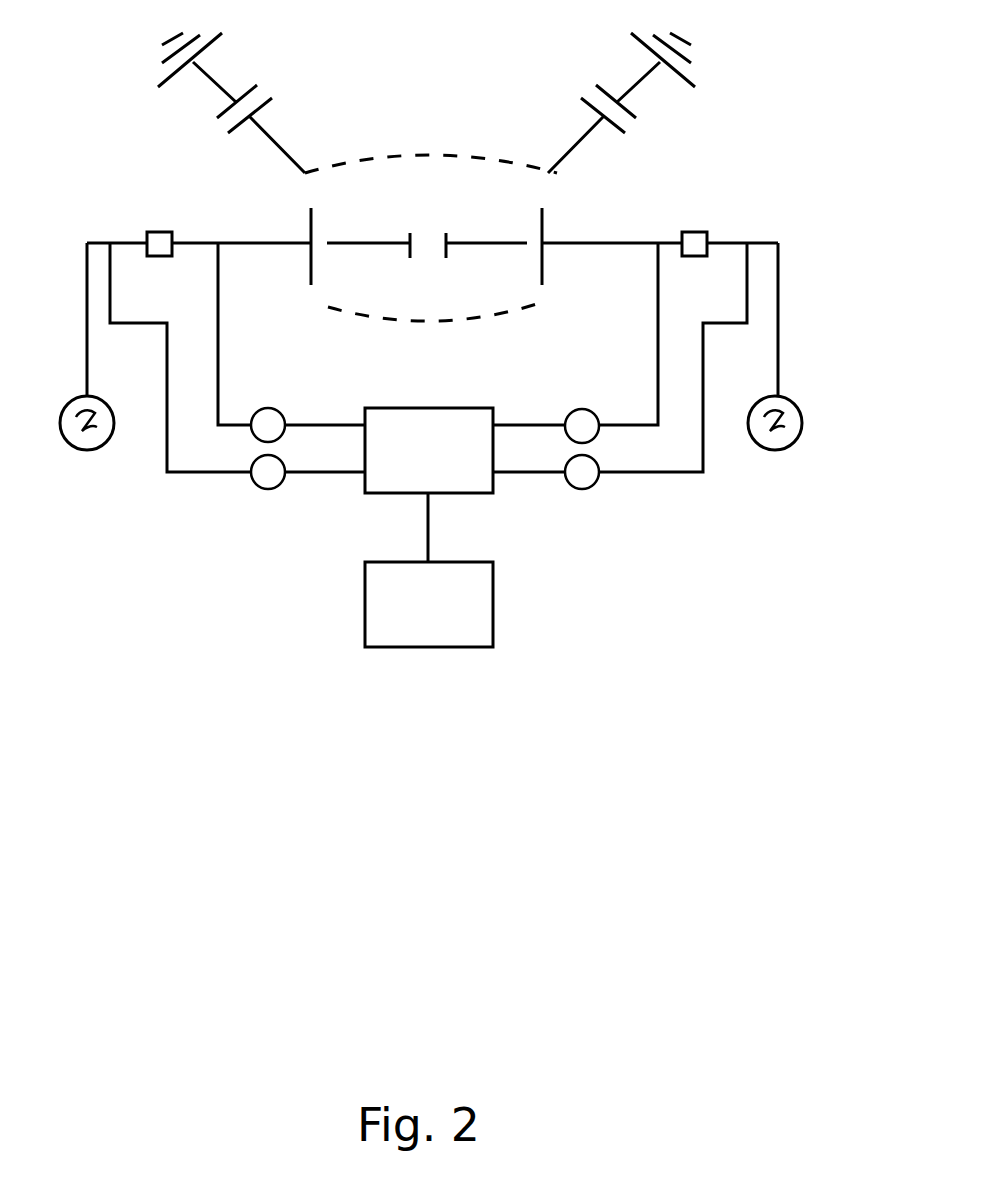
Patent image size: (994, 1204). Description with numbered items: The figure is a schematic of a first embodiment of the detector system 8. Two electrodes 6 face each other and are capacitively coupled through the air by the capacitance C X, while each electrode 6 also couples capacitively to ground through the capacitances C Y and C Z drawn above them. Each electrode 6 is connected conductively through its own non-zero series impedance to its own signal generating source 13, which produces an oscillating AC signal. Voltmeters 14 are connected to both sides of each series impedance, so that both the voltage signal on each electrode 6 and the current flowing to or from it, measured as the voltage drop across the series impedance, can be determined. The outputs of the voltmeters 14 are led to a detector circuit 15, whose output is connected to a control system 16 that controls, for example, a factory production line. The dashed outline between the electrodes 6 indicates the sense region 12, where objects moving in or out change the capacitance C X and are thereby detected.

The electrode 6 is at (552, 217).
The detector system 8 is at (203, 553).
The sense region 12 is at (445, 185).
The signal generating source 13 is at (807, 462).
The voltmeter 14 is at (617, 515).
The detector circuit 15 is at (467, 483).
The control system 16 is at (467, 633).